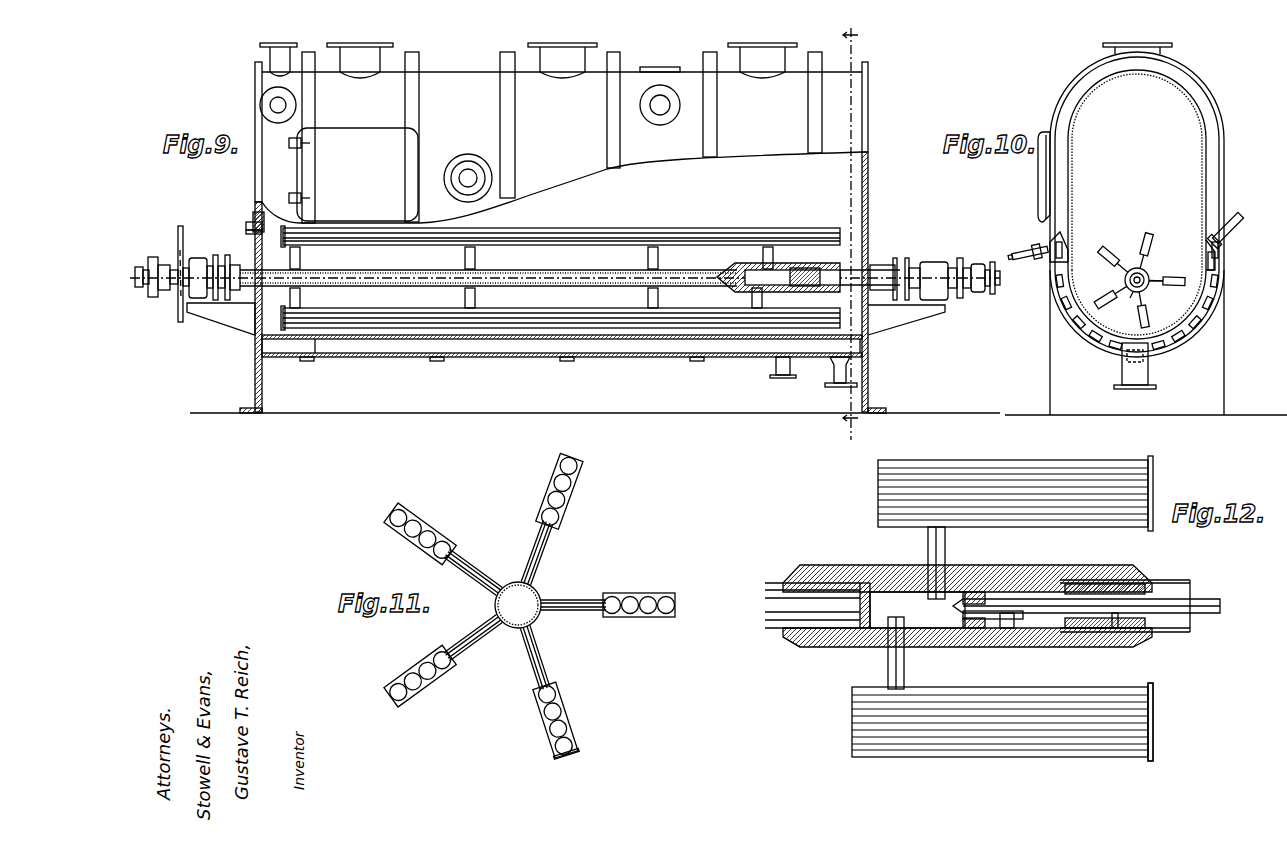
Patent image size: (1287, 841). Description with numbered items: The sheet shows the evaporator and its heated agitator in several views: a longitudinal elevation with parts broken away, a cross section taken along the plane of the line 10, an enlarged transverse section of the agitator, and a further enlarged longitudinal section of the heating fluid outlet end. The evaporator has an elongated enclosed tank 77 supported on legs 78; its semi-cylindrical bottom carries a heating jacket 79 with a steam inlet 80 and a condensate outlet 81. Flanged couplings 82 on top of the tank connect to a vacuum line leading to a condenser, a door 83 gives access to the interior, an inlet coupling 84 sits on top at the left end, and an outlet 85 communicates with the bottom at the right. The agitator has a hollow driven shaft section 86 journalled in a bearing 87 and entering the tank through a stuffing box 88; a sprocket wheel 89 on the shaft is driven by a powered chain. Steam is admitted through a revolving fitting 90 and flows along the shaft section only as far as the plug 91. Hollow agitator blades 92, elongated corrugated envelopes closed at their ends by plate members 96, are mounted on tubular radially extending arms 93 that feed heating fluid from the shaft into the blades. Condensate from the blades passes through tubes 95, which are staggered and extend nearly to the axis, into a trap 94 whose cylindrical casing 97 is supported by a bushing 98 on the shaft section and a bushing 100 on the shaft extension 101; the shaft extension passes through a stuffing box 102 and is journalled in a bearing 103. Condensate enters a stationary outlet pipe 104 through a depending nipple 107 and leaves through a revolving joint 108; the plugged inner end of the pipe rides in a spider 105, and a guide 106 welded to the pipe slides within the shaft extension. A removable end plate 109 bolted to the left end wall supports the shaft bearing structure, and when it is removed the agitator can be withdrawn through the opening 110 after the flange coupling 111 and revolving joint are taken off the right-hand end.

In FIG. 9, the section line 10 is at (853, 232).
In FIG. 9, the tank 77 is at (257, 110).
In FIG. 10, the tank 77 is at (1208, 175).
In FIG. 9, the legs 78 is at (254, 393).
In FIG. 10, the legs 78 is at (1224, 389).
In FIG. 9, the heating jacket 79 is at (465, 360).
In FIG. 10, the heating jacket 79 is at (1213, 318).
In FIG. 10, the steam inlet 80 is at (1225, 235).
In FIG. 9, the condensate outlet 81 is at (776, 372).
In FIG. 9, the flanged couplings 82 is at (370, 44).
In FIG. 10, the flanged couplings 82 is at (1162, 44).
In FIG. 9, the door 83 is at (416, 146).
In FIG. 10, the door 83 is at (1040, 186).
In FIG. 9, the inlet coupling 84 is at (290, 44).
In FIG. 9, the outlet 85 is at (832, 368).
In FIG. 10, the outlet 85 is at (1122, 375).
In FIG. 9, the hollow driven shaft section 86 is at (264, 272).
In FIG. 11, the hollow driven shaft section 86 is at (538, 595).
In FIG. 12, the hollow driven shaft section 86 is at (773, 580).
In FIG. 9, the bearing 87 is at (202, 262).
In FIG. 9, the stuffing box 88 is at (228, 262).
In FIG. 9, the sprocket wheel 89 is at (186, 236).
In FIG. 9, the revolving fitting 90 is at (143, 265).
In FIG. 9, the plug 91 is at (735, 285).
In FIG. 12, the plug 91 is at (860, 613).
In FIG. 9, the hollow agitator blades 92 is at (582, 230).
In FIG. 10, the hollow agitator blades 92 is at (1100, 290).
In FIG. 11, the hollow agitator blades 92 is at (562, 715).
In FIG. 12, the hollow agitator blades 92 is at (1010, 460).
In FIG. 9, the tubular radially extending arms 93 is at (301, 261).
In FIG. 11, the tubular radially extending arms 93 is at (540, 657).
In FIG. 9, the trap 94 is at (786, 268).
In FIG. 9, the tubes 95 is at (764, 259).
In FIG. 12, the tubes 95 is at (945, 545).
In FIG. 11, the plate members 96 is at (572, 750).
In FIG. 12, the plate members 96 is at (1153, 717).
In FIG. 12, the cylindrical casing 97 is at (900, 558).
In FIG. 12, the bushing 98 is at (793, 641).
In FIG. 10, the bushing 100 is at (1130, 260).
In FIG. 12, the bushing 100 is at (1140, 575).
In FIG. 9, the shaft extension 101 is at (856, 272).
In FIG. 10, the shaft extension 101 is at (1125, 297).
In FIG. 12, the shaft extension 101 is at (1184, 580).
In FIG. 9, the stuffing box 102 is at (896, 262).
In FIG. 9, the bearing 103 is at (930, 262).
In FIG. 10, the stationary outlet pipe 104 is at (1150, 286).
In FIG. 12, the stationary outlet pipe 104 is at (1056, 600).
In FIG. 12, the spider 105 is at (963, 630).
In FIG. 12, the guide 106 is at (1113, 637).
In FIG. 12, the depending nipple 107 is at (1014, 630).
In FIG. 9, the revolving joint 108 is at (978, 292).
In FIG. 10, the revolving joint 108 is at (1030, 246).
In FIG. 9, the removable end plate 109 is at (252, 225).
In FIG. 9, the opening 110 is at (257, 220).
In FIG. 9, the flange coupling 111 is at (958, 260).